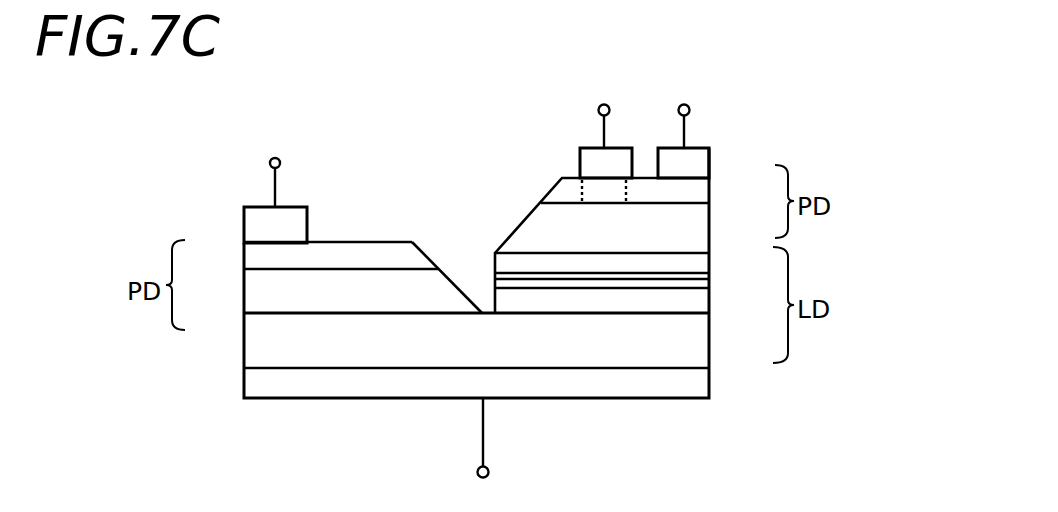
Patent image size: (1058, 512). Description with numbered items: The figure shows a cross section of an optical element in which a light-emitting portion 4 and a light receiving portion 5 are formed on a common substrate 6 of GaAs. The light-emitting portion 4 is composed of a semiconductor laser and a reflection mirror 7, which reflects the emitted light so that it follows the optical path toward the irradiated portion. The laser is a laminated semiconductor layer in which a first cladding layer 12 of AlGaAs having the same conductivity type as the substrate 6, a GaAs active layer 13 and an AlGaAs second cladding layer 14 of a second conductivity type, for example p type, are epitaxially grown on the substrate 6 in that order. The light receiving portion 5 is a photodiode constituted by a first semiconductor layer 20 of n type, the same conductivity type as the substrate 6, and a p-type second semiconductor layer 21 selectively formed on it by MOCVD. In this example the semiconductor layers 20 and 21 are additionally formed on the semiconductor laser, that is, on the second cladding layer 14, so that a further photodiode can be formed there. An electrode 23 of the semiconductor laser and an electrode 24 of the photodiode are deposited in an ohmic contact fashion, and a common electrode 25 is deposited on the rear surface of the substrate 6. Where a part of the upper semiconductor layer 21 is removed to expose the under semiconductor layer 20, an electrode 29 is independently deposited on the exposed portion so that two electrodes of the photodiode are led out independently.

The light-emitting portion 4 is at (658, 83).
The light receiving portion 5 is at (372, 199).
The substrate 6 is at (645, 355).
The reflection mirror 7 is at (455, 280).
The first cladding layer 12 is at (695, 300).
The active layer 13 is at (695, 280).
The second cladding layer 14 is at (690, 264).
The first semiconductor layer 20 is at (262, 292).
The second semiconductor layer 21 is at (262, 252).
The electrode 23 is at (695, 162).
The electrode 24 is at (262, 218).
The common electrode 25 is at (560, 382).
The electrode 29 is at (598, 168).